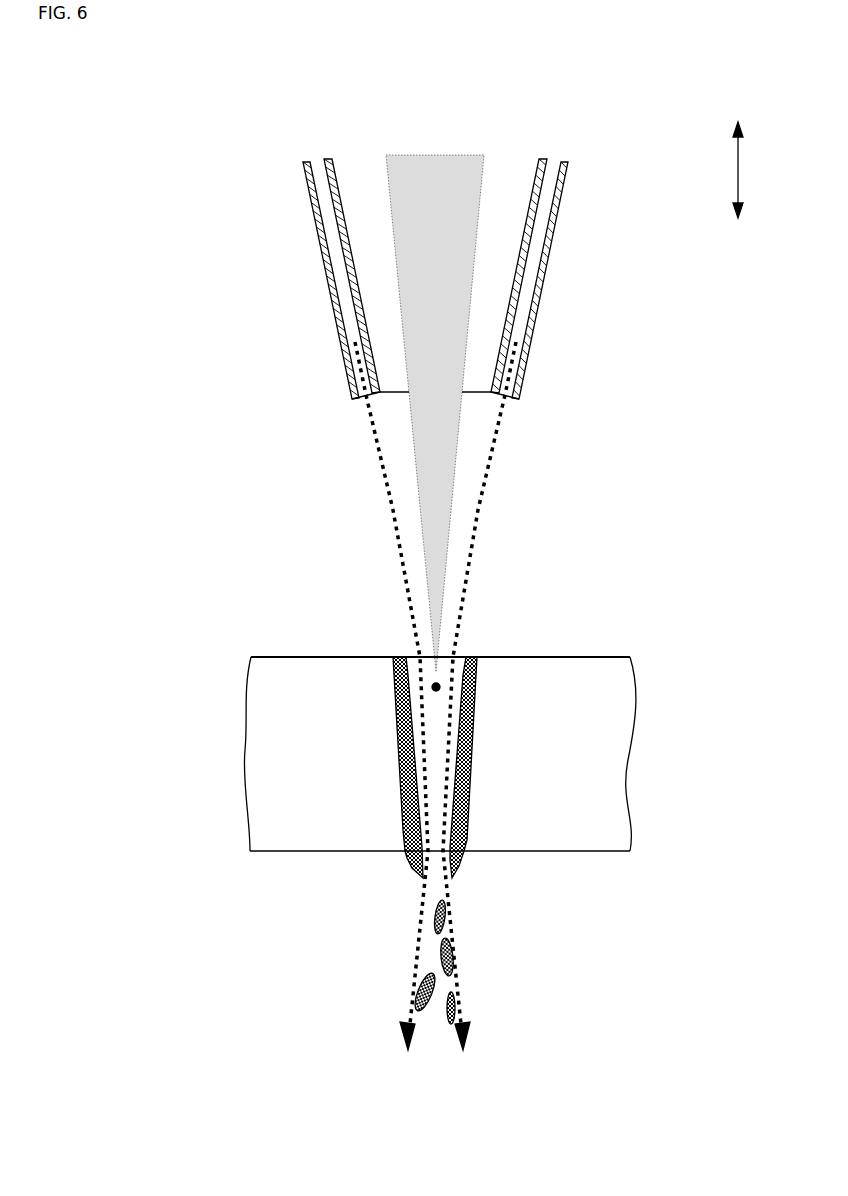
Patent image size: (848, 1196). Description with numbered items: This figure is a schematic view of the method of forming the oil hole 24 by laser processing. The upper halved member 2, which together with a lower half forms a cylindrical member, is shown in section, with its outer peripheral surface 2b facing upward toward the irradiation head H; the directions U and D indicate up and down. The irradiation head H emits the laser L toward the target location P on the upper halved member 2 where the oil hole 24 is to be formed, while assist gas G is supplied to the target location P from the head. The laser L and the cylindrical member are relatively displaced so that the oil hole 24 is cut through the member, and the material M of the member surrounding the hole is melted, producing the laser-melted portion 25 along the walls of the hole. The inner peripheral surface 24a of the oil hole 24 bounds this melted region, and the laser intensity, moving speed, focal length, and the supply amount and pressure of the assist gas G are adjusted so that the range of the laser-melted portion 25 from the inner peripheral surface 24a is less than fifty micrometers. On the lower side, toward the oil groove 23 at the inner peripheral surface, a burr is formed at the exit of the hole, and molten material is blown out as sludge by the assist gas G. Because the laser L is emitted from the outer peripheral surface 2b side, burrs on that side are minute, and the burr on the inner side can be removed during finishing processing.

The upper halved member 2 is at (318, 582).
The outer peripheral surface 2b is at (592, 657).
The oil groove 23 is at (328, 851).
The oil hole 24 is at (412, 663).
The inner peripheral surface of the oil hole 24a is at (456, 748).
The laser-melted portion 25 is at (475, 787).
The member / material M is at (293, 667).
The target location P is at (440, 687).
The laser L is at (427, 442).
The assist gas G is at (492, 468).
The irradiation head H is at (549, 262).
The upward direction U is at (738, 151).
The downward direction D is at (738, 224).
The element burr is at (458, 872).
The element sludge is at (413, 987).